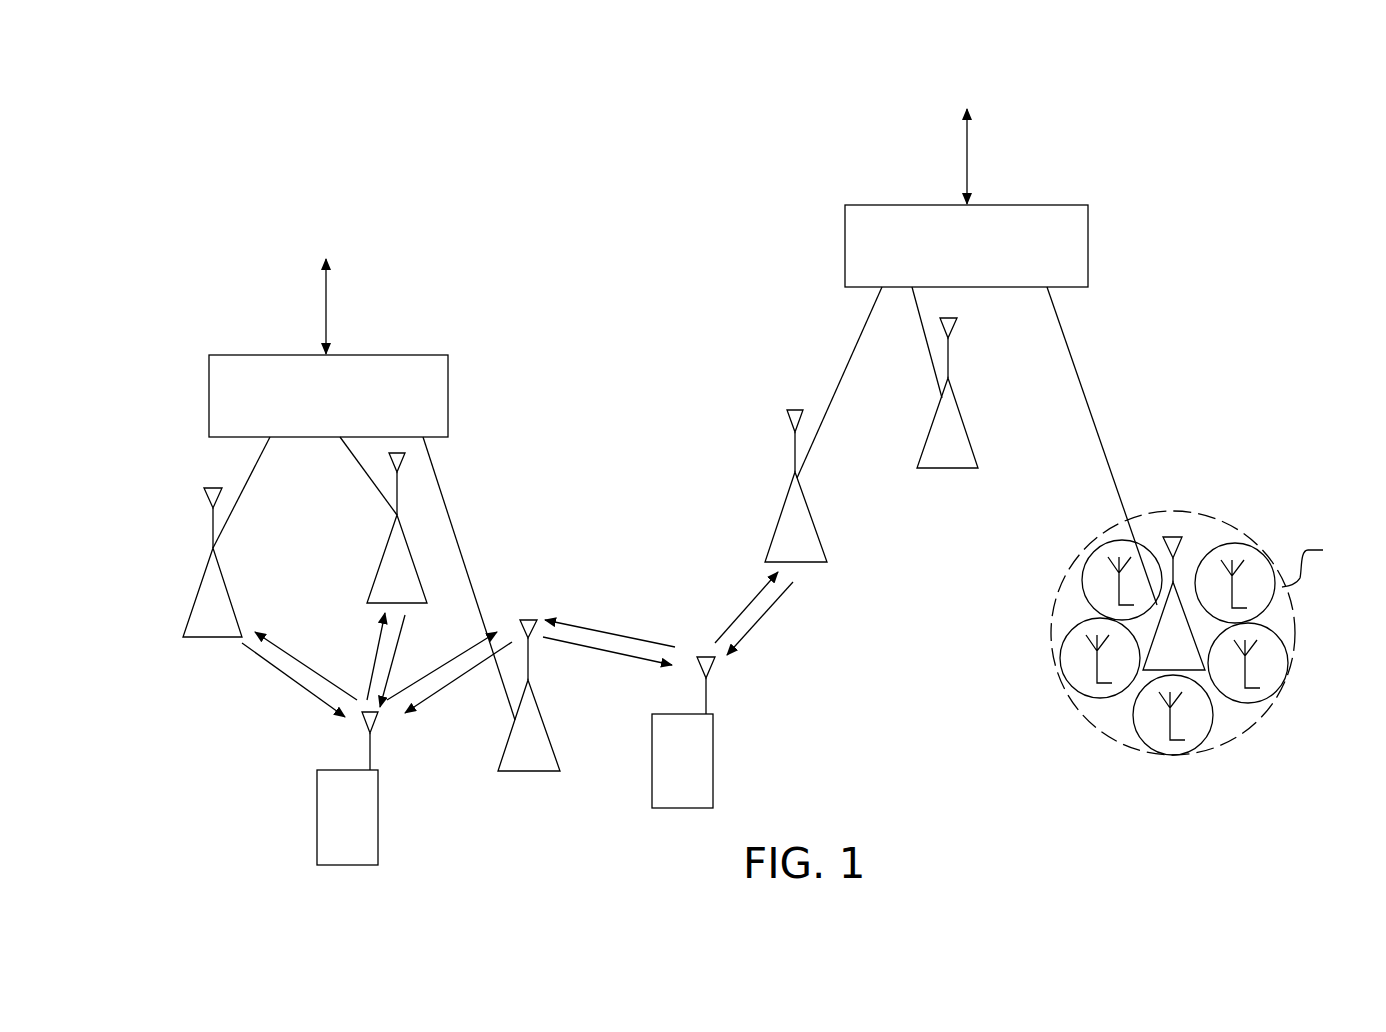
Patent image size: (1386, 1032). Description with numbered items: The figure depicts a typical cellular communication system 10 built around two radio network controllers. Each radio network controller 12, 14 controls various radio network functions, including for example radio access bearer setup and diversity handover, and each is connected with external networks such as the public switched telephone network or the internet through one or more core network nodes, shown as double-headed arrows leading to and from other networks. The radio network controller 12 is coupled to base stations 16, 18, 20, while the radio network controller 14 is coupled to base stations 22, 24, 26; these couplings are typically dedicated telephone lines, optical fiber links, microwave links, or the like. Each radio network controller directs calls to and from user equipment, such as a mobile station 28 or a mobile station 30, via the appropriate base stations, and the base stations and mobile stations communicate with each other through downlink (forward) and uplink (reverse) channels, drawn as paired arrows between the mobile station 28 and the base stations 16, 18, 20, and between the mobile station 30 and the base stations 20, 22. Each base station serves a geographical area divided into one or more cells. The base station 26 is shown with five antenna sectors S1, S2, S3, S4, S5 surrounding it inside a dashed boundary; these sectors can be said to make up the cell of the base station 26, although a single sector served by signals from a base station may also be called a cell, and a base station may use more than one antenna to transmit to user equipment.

The cellular communication system 10 is at (183, 301).
The radio network controller 12 is at (435, 419).
The radio network controller 14 is at (1076, 271).
The base station 16 is at (205, 572).
The base station 18 is at (383, 558).
The base station 20 is at (537, 705).
The base station 22 is at (811, 516).
The base station 24 is at (957, 405).
The base station 26 is at (1183, 545).
The mobile station 28 is at (317, 800).
The mobile station 30 is at (652, 745).
The antenna sector S1 is at (1252, 545).
The antenna sector S2 is at (1274, 697).
The antenna sector S3 is at (1211, 732).
The antenna sector S4 is at (1058, 657).
The antenna sector S5 is at (1080, 574).